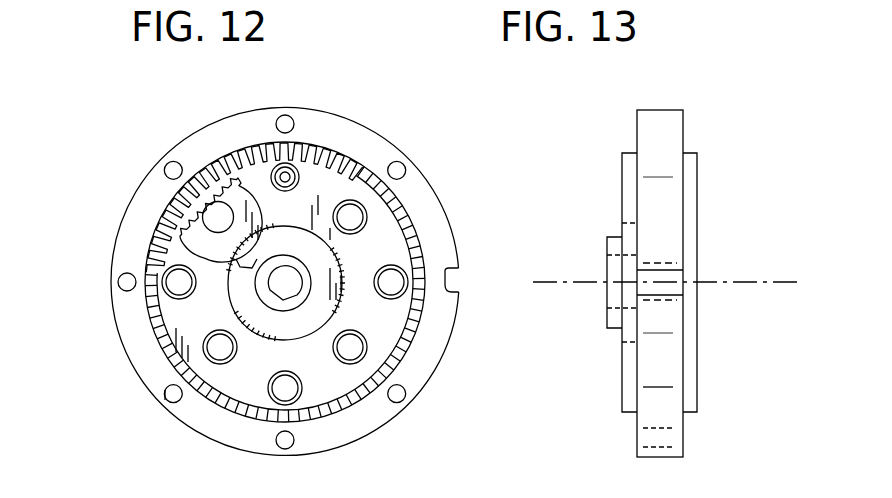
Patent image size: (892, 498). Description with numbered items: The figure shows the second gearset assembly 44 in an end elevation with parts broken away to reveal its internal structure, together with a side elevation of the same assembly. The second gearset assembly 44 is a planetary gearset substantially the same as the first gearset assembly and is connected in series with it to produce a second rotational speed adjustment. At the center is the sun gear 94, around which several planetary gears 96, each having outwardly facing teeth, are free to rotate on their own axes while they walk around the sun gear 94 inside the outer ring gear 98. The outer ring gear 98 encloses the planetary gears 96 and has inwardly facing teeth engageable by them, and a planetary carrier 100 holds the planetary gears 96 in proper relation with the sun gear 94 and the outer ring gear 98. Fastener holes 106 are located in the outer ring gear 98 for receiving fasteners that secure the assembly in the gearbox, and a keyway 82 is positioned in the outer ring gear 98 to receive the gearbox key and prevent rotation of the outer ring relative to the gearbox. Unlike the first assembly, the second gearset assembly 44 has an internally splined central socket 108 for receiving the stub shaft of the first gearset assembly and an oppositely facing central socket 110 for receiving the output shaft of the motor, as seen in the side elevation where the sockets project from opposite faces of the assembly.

In FIG. 12, the second gearset assembly 44 is at (147, 182).
In FIG. 13, the second gearset assembly 44 is at (638, 138).
In FIG. 12, the keyway 82 is at (460, 287).
In FIG. 12, the sun gear 94 is at (288, 226).
In FIG. 12, the planetary gears 96 is at (243, 183).
In FIG. 12, the outer ring gear 98 is at (450, 220).
In FIG. 12, the planetary carrier 100 is at (338, 376).
In FIG. 13, the planetary carrier 100 is at (622, 185).
In FIG. 12, the fastener holes 106 is at (393, 163).
In FIG. 12, the internally splined central socket 108 is at (221, 223).
In FIG. 13, the internally splined central socket 108 is at (610, 267).
In FIG. 12, the central socket 110 is at (265, 287).
In FIG. 13, the central socket 110 is at (687, 272).